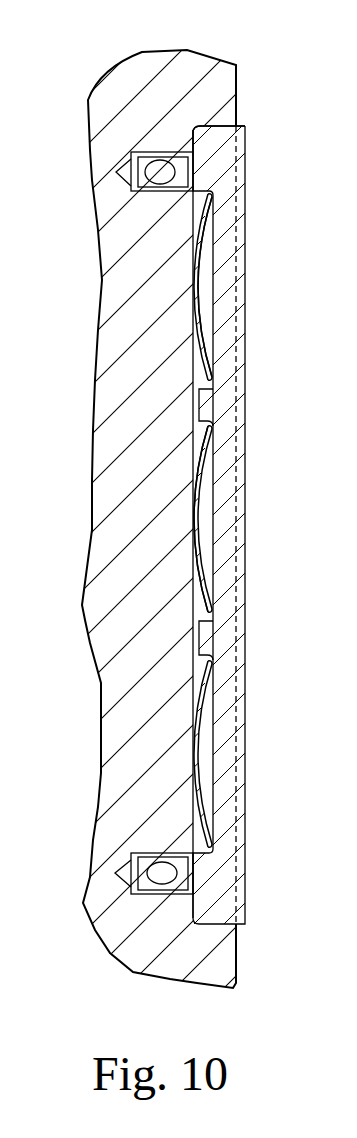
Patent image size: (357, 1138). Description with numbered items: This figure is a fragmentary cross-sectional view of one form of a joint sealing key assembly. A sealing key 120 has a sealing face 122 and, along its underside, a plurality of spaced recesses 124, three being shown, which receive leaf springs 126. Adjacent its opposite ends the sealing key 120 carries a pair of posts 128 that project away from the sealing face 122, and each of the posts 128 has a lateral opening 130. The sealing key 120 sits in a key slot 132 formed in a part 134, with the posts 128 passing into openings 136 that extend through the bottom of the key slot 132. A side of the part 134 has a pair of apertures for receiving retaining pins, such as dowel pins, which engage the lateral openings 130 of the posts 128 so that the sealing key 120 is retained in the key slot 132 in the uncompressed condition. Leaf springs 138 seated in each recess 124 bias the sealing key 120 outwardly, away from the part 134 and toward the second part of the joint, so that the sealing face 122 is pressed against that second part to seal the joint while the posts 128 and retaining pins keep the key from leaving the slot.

The sealing key 120 is at (215, 400).
The sealing face 122 is at (245, 467).
The recesses 124 is at (205, 279).
The leaf springs 126 is at (210, 228).
The posts 128 is at (165, 151).
The lateral openings 130 is at (150, 873).
The key slot 132 is at (193, 148).
The part 134 is at (115, 592).
The openings 136 is at (152, 186).
The leaf springs 138 is at (197, 513).